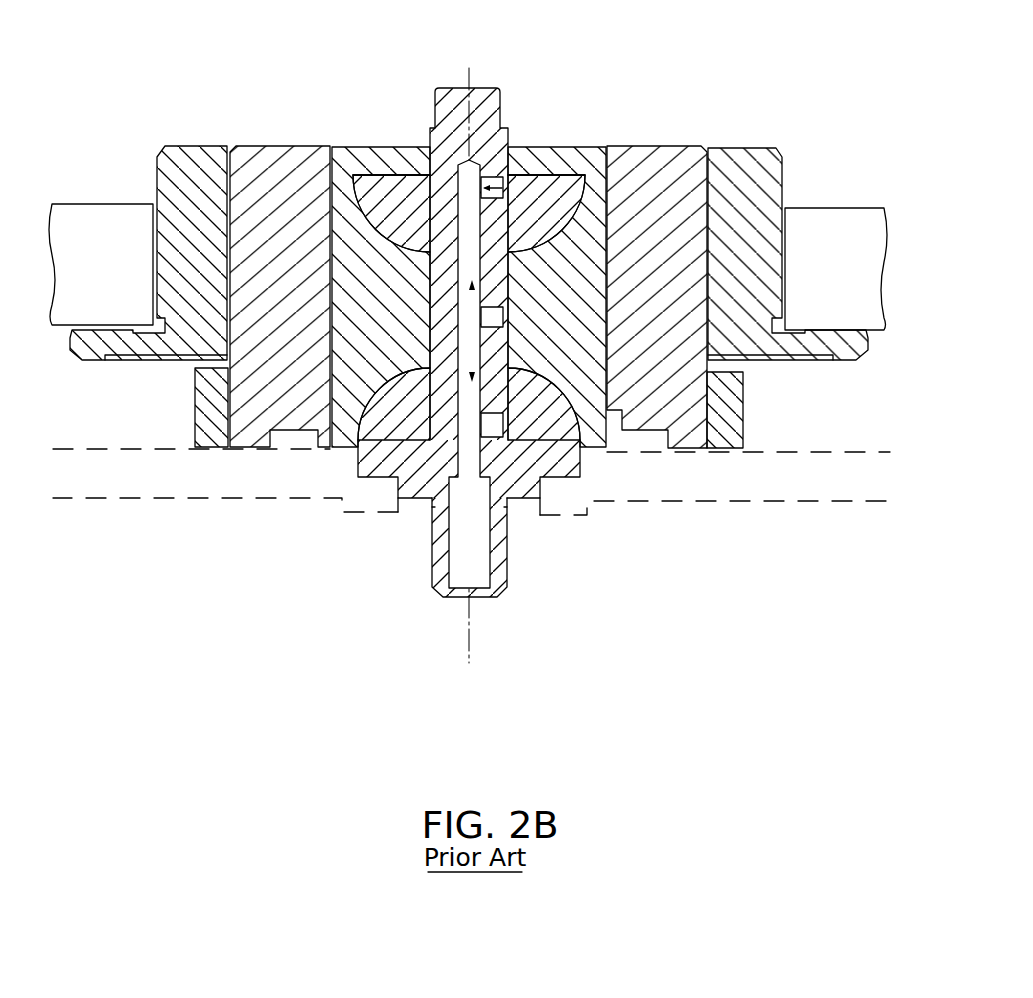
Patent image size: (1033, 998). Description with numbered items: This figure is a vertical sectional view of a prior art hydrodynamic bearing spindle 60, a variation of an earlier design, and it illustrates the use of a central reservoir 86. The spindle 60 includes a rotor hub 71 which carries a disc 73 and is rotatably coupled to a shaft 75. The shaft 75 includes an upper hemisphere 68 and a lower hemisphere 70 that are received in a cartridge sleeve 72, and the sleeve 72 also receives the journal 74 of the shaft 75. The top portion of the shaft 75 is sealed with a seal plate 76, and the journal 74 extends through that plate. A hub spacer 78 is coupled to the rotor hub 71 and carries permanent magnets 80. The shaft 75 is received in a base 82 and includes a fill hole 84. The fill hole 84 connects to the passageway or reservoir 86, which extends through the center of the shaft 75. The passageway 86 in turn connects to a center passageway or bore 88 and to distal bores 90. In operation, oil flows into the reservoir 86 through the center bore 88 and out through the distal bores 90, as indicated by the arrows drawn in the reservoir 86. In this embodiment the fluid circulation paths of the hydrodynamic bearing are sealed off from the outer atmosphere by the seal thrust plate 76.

The spindle 60 is at (771, 96).
The upper hemisphere 68 is at (398, 197).
The lower hemisphere 70 is at (380, 432).
The rotor hub 71 is at (745, 197).
The cartridge sleeve 72 is at (595, 217).
The disc 73 is at (810, 218).
The journal 74 is at (447, 320).
The shaft 75 is at (430, 350).
The seal plate 76 is at (541, 153).
The hub spacer 78 is at (258, 170).
The permanent magnets 80 is at (728, 410).
The base 82 is at (98, 474).
The fill hole 84 is at (480, 593).
The central reservoir 86 is at (478, 465).
The center passageway or bore 88 is at (512, 322).
The distal bores 90 is at (490, 180).